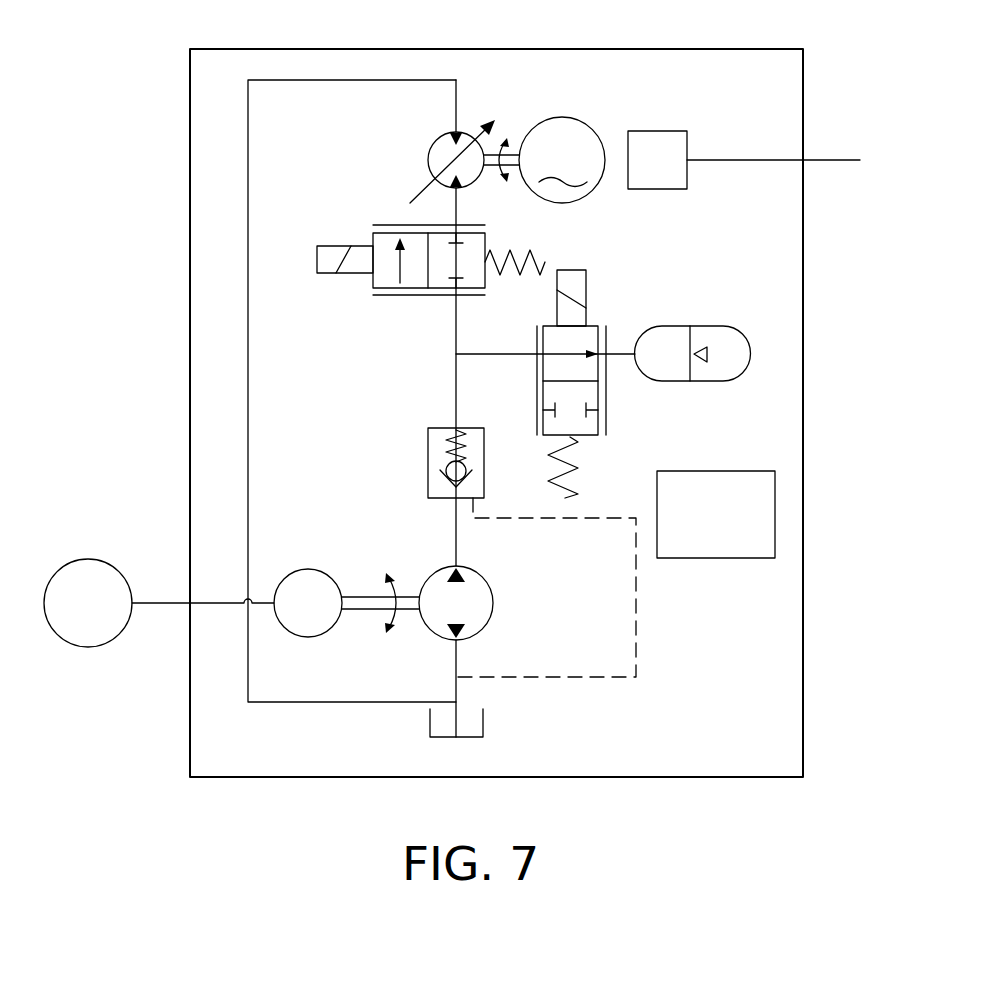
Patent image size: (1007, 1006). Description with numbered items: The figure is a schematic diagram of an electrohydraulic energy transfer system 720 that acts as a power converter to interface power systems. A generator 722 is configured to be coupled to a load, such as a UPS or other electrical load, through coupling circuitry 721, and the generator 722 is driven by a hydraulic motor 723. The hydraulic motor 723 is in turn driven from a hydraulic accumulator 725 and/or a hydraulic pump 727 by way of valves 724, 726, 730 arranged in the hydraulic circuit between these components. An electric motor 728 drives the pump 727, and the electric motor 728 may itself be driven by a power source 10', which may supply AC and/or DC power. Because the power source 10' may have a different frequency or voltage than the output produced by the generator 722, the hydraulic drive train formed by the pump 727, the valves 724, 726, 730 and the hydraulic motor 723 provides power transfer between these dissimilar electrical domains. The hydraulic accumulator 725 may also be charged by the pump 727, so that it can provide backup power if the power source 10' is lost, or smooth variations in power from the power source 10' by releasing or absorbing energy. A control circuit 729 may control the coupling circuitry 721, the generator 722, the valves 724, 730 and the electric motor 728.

The electrohydraulic energy transfer system 720 is at (495, 49).
The coupling circuitry 721 is at (657, 131).
The generator 722 is at (562, 117).
The hydraulic motor 723 is at (428, 160).
The valve 724 is at (317, 260).
The hydraulic accumulator 725 is at (690, 326).
The valve 726 is at (428, 465).
The hydraulic pump 727 is at (493, 603).
The electric motor 728 is at (308, 569).
The control circuit 729 is at (716, 471).
The valve 730 is at (572, 270).
The power source 10' is at (71, 586).